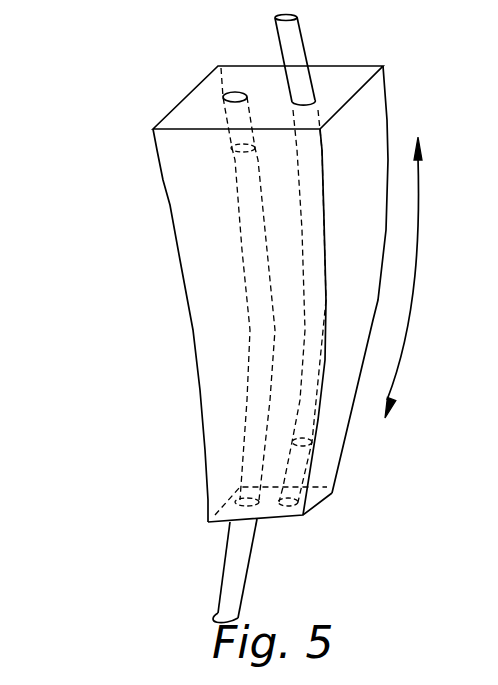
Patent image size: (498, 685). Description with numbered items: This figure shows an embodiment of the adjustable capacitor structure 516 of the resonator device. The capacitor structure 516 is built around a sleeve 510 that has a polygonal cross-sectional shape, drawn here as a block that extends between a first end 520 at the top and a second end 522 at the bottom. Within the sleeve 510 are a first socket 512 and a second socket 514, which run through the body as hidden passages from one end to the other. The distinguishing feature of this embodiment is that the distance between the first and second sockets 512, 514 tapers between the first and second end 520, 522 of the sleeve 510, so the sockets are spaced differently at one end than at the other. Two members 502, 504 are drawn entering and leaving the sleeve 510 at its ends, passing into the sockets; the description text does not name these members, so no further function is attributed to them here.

The inlet tube 502 is at (304, 44).
The outlet tube 504 is at (221, 587).
The sleeve 510 is at (197, 340).
The first socket 512 is at (290, 516).
The second socket 514 is at (232, 80).
The capacitor structure 516 is at (221, 296).
The first end 520 is at (355, 74).
The second end 522 is at (222, 526).